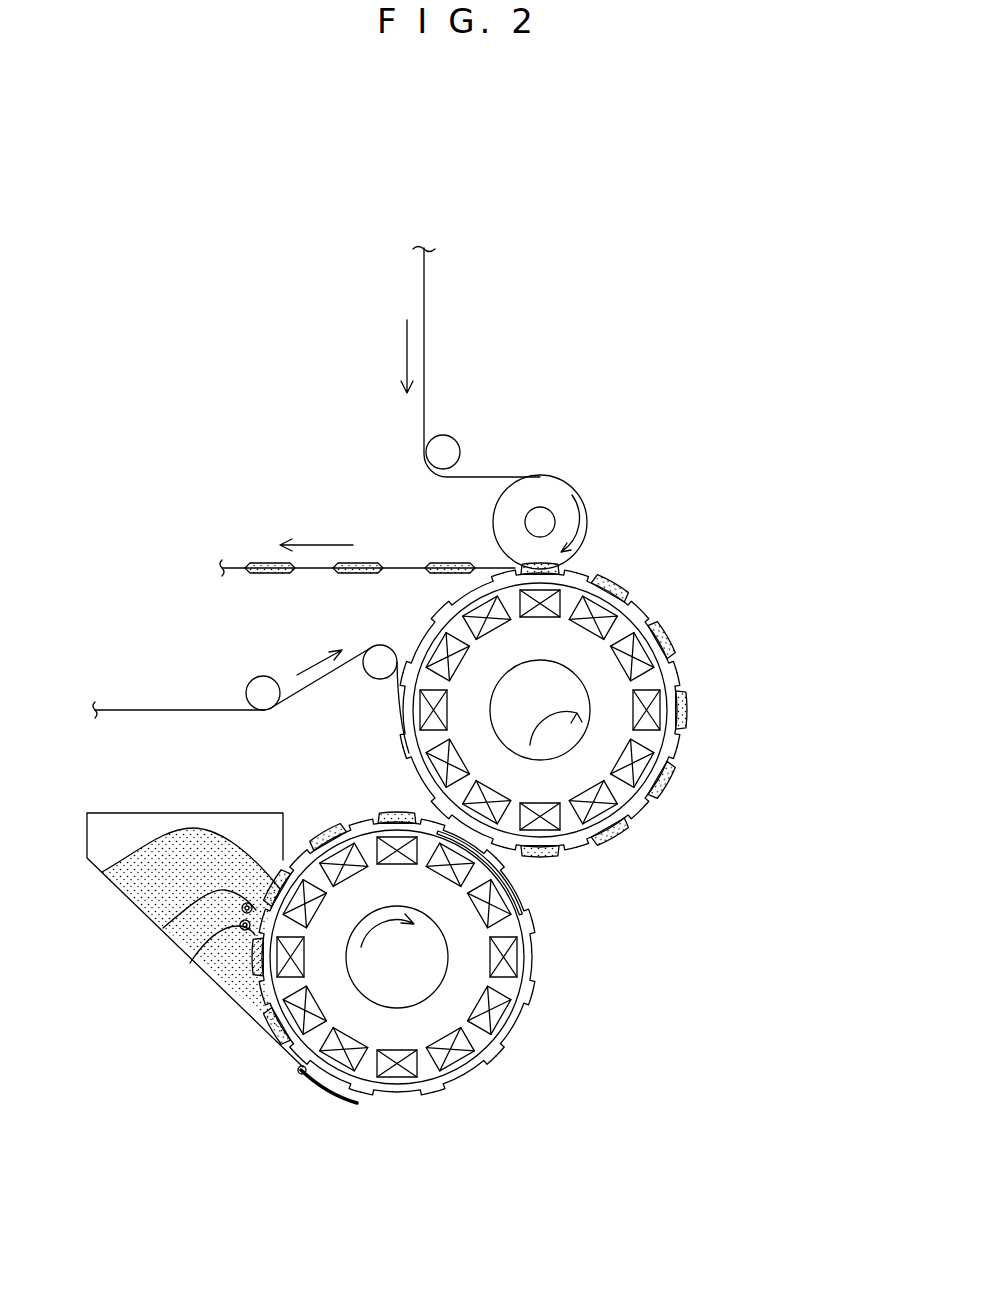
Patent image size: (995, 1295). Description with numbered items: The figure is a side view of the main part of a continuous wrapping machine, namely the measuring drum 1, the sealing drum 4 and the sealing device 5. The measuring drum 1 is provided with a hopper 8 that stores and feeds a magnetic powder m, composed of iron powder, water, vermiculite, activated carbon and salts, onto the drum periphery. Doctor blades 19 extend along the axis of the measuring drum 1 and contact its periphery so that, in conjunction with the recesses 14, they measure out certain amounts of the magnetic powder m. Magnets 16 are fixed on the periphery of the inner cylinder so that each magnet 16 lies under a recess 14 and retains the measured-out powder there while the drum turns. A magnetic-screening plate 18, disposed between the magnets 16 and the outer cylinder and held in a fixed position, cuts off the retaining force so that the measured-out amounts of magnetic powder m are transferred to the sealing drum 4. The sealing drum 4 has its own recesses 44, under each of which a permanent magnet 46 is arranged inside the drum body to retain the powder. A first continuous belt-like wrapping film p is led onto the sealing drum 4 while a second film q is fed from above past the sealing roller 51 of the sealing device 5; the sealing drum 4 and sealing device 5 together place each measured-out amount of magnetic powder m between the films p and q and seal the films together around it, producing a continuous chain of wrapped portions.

The measuring drum 1 is at (557, 946).
The sealing drum 4 is at (631, 710).
The sealing device 5 is at (572, 463).
The hopper 8 is at (230, 998).
The recesses 14 is at (507, 1040).
The magnets 16 is at (455, 1137).
The magnetic-screening plate 18 is at (533, 873).
The doctor blades 19 is at (244, 928).
The recesses 44 is at (758, 772).
The permanent magnets 46 is at (758, 819).
The sealing roller 51 is at (575, 491).
The magnetic powder m is at (682, 715).
The first continuous belt-like wrapping film p is at (188, 708).
The second continuous belt-like wrapping film q is at (424, 283).